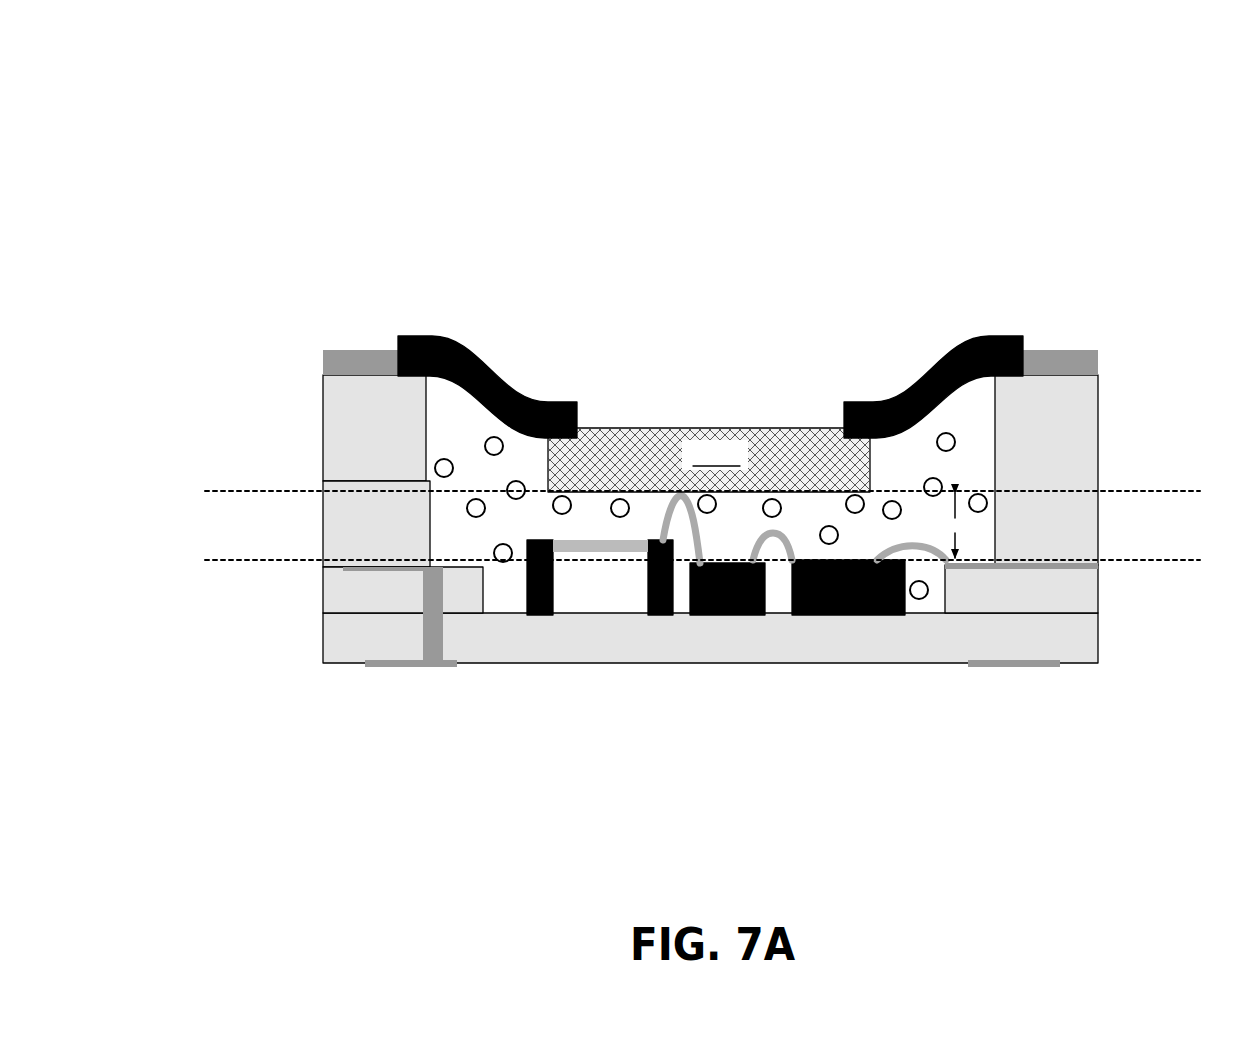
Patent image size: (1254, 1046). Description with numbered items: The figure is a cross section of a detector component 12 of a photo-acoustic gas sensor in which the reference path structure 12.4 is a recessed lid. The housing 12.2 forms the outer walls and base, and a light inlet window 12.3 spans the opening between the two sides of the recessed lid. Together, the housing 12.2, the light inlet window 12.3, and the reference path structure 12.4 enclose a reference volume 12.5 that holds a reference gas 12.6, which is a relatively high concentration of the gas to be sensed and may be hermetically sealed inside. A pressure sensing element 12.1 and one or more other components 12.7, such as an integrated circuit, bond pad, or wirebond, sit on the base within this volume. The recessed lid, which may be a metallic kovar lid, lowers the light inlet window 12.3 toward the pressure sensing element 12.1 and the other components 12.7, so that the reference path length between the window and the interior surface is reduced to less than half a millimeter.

The detector component 12 is at (199, 66).
The pressure sensing element 12.1 is at (625, 600).
The housing 12.2 is at (332, 455).
The light inlet window 12.3 is at (740, 466).
The reference path structure 12.4 is at (455, 336).
The reference volume 12.5 is at (811, 505).
The reference gas 12.6 is at (620, 499).
The other components 12.7 is at (837, 615).